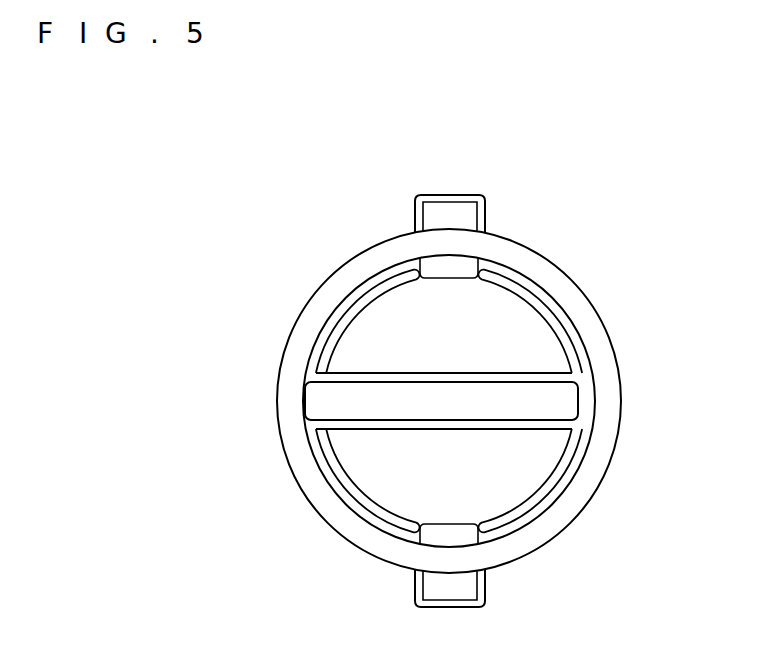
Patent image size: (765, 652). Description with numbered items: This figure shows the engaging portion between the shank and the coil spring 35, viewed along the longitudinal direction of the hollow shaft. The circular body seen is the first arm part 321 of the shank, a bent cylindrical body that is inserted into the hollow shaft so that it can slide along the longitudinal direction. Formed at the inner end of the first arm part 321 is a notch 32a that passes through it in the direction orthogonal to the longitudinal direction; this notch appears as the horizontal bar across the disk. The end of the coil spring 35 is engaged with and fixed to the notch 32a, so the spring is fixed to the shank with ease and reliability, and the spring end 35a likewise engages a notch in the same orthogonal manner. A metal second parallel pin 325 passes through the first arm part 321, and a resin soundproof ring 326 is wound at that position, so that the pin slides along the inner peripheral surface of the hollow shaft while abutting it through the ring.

The coil spring 35 is at (612, 384).
The fixed end 35a is at (543, 406).
The first arm part 321 is at (518, 333).
The notch 32a is at (447, 378).
The second parallel pin 325 is at (467, 215).
The soundproof ring 326 is at (444, 197).